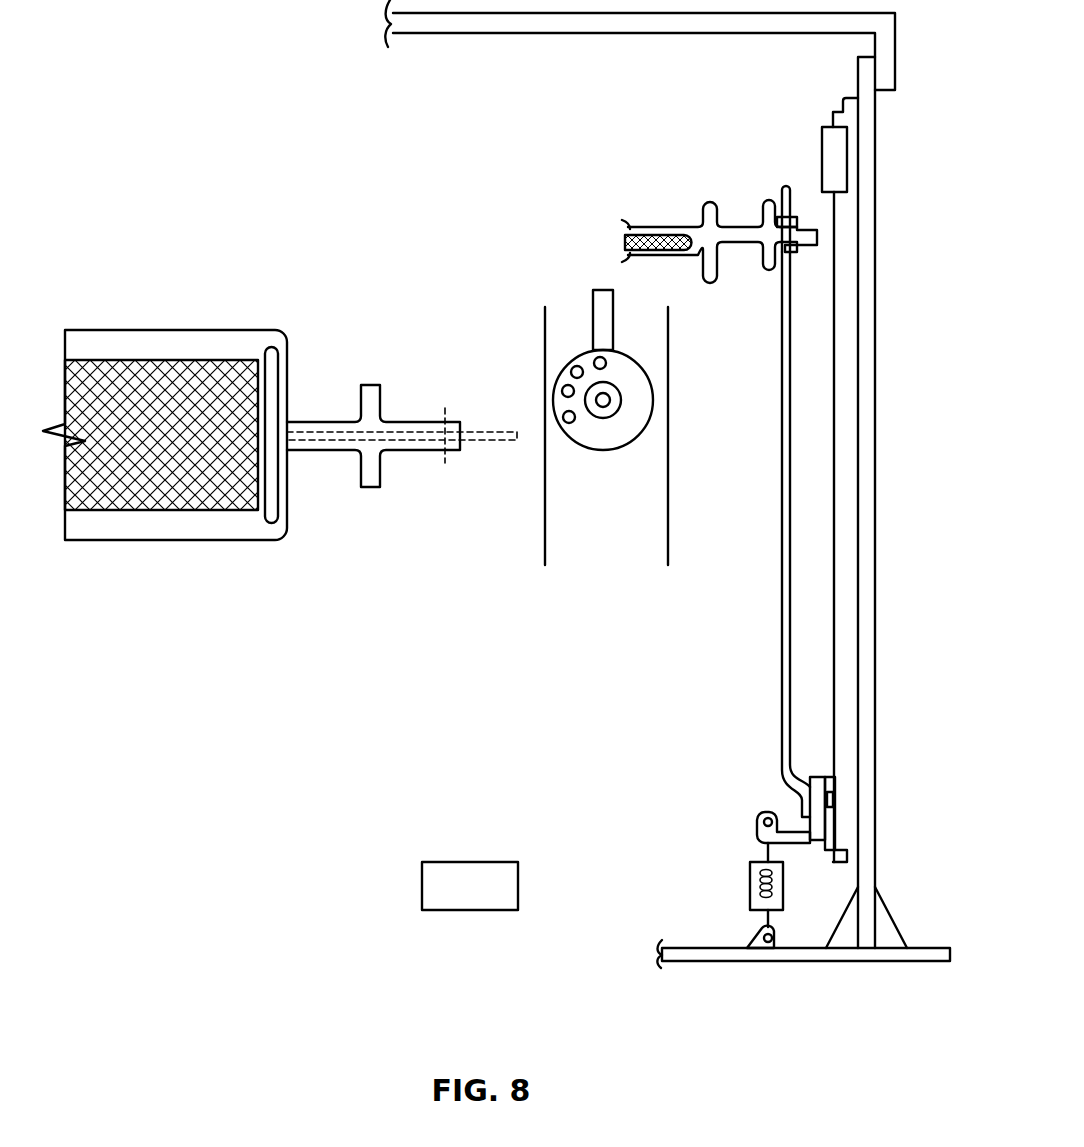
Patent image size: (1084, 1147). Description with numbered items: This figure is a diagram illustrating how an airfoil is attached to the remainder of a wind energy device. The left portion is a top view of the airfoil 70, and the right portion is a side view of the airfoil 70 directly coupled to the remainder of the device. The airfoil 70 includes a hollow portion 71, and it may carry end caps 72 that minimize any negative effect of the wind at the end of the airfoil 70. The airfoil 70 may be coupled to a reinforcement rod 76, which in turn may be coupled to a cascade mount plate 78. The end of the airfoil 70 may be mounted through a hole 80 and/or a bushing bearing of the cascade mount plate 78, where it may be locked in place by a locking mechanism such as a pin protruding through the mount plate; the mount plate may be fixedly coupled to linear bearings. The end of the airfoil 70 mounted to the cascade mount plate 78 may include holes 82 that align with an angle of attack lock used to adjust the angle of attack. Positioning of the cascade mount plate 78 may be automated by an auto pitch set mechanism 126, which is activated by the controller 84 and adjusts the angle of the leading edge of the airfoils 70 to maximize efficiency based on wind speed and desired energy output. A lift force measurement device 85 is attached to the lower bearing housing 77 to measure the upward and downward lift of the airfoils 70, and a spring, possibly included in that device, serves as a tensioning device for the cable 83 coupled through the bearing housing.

The airfoil 70 is at (430, 350).
The hollow portion 71 is at (118, 372).
The end caps 72 is at (270, 386).
The reinforcement rod 76 is at (497, 440).
The lower bearing housing 77 is at (818, 823).
The cascade mount plate 78 is at (615, 437).
The hole 80 is at (610, 400).
The holes 82 is at (575, 360).
The cable 83 is at (835, 613).
The controller 84 is at (500, 905).
The lift force measurement device 85 is at (778, 902).
The auto pitch set mechanism 126 is at (790, 557).